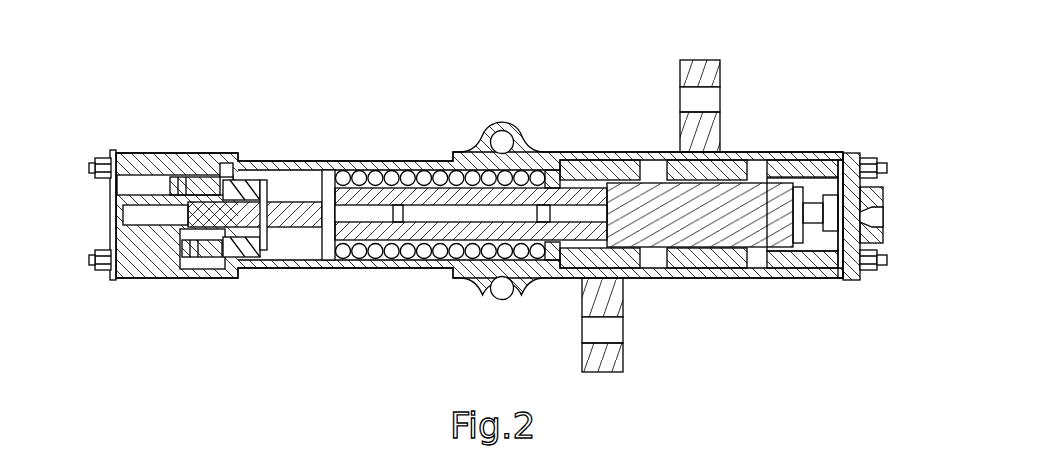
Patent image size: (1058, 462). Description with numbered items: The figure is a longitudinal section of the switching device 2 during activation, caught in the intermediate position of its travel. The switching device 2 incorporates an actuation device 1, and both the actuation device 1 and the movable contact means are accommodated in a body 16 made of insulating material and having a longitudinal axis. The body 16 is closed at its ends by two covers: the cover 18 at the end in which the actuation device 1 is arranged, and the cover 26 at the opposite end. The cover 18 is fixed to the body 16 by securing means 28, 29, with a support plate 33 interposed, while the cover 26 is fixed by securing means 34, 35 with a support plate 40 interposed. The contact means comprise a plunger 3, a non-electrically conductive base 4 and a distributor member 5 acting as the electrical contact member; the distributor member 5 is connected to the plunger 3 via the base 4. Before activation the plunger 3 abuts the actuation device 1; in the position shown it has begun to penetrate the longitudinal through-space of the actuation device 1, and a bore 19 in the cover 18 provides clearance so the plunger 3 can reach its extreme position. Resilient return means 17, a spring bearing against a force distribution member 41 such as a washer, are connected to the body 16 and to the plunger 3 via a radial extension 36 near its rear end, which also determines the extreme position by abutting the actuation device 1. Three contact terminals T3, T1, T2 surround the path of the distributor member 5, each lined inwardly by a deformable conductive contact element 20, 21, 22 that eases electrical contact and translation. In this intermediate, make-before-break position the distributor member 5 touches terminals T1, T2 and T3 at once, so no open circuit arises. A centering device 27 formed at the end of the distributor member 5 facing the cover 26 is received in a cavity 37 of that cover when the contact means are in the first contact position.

The actuation device 1 is at (290, 258).
The switching device 2 is at (357, 86).
The plunger 3 is at (303, 208).
The non-electrically conductive base 4 is at (415, 258).
The distributor member 5 is at (752, 208).
The body 16 is at (457, 292).
The resilient return means 17 is at (430, 165).
The cover 18 is at (160, 176).
The bore 19 is at (143, 212).
The contact element 20 is at (610, 262).
The contact element 21 is at (710, 265).
The contact element 22 is at (812, 255).
The cover 26 is at (878, 190).
The centering device 27 is at (838, 160).
The securing means 28 is at (90, 137).
The securing means 29 is at (92, 292).
The support plate 33 is at (124, 208).
The securing means 34 is at (879, 136).
The securing means 35 is at (881, 304).
The radial extension 36 is at (333, 258).
The cavity 37 is at (862, 217).
The support plate 40 is at (852, 265).
The force distribution member 41 is at (556, 265).
The contact terminal T1 is at (692, 128).
The contact terminal T2 is at (810, 215).
The contact terminal T3 is at (606, 160).